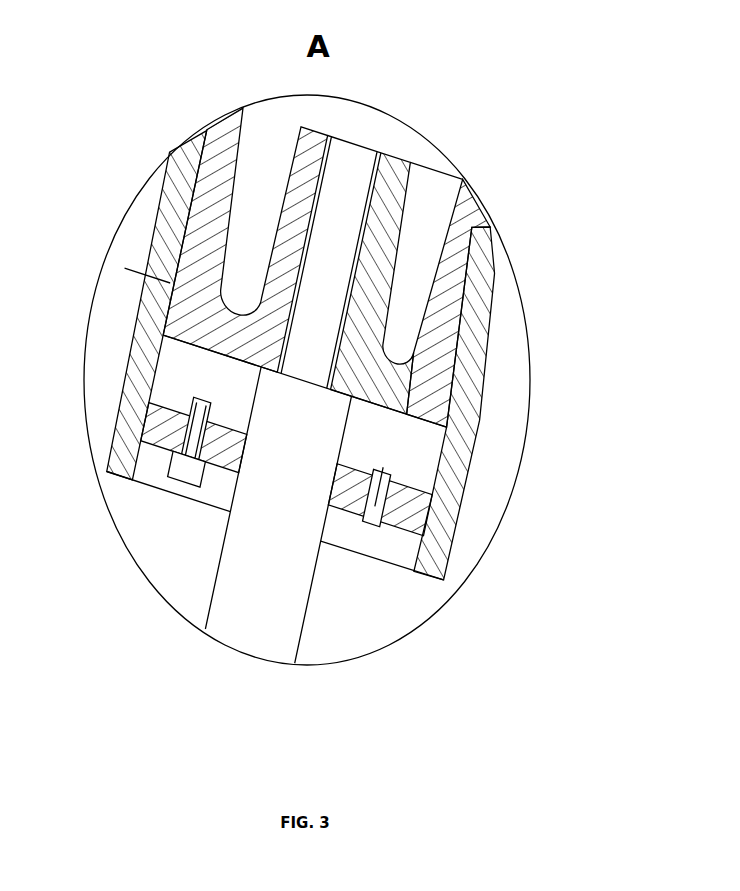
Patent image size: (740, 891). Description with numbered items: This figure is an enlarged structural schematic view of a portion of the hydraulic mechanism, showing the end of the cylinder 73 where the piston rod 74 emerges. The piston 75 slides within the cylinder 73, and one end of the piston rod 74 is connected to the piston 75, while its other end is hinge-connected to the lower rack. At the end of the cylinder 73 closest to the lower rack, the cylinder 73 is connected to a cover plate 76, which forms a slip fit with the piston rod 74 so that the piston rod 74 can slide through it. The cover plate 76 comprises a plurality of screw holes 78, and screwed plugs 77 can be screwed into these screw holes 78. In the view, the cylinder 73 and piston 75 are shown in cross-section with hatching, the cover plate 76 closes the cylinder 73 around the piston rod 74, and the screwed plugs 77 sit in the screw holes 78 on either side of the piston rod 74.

The cylinder 73 is at (343, 351).
The piston rod 74 is at (250, 548).
The piston 75 is at (370, 262).
The cover plate 76 is at (123, 371).
The screwed plugs 77 is at (148, 515).
The screw holes 78 is at (422, 565).